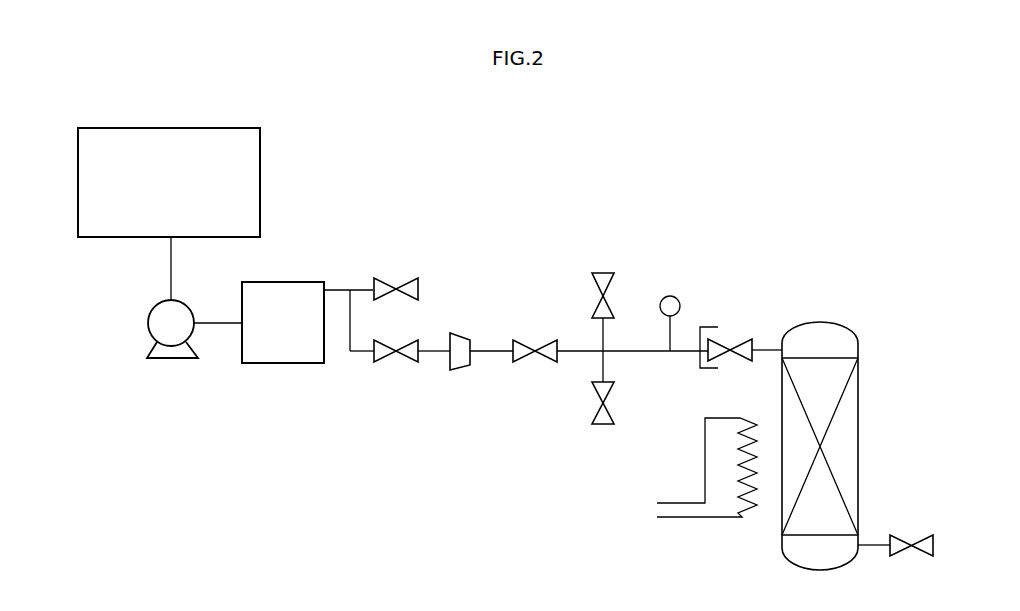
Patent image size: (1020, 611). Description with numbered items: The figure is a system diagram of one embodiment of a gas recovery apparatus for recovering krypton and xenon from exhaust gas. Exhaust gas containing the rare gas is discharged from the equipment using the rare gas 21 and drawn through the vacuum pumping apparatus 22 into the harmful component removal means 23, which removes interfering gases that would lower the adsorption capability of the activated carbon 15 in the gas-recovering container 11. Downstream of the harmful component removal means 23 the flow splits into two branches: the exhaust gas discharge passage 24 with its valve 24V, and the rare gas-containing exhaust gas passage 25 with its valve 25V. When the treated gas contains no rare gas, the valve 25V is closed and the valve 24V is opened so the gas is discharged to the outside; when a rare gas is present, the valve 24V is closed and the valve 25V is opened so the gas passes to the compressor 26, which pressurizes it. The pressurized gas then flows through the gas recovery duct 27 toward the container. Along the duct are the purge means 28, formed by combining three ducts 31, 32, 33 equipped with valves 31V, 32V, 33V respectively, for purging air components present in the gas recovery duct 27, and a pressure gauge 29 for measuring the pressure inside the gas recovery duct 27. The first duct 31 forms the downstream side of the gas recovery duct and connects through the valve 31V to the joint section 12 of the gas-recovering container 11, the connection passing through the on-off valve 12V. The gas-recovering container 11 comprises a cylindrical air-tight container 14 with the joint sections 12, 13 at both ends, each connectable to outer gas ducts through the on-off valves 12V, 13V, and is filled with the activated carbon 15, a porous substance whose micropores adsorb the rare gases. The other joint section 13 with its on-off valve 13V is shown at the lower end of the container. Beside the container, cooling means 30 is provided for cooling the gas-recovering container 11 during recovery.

The gas-recovering container 11 is at (851, 403).
The joint section 12 is at (765, 345).
The on-off valve 12V is at (723, 340).
The joint section 13 is at (868, 547).
The on-off valve 13V is at (920, 535).
The air-tight container 14 is at (860, 378).
The activated carbon 15 is at (848, 445).
The equipment using the rare gas 21 is at (260, 148).
The vacuum pumping apparatus 22 is at (185, 303).
The harmful component removal means 23 is at (297, 282).
The exhaust gas discharge passage 24 is at (357, 290).
The valve of the exhaust gas discharge passage 24V is at (405, 278).
The rare gas-containing exhaust gas passage 25 is at (360, 352).
The valve of the rare gas-containing exhaust gas passage 25V is at (392, 362).
The compressor 26 is at (455, 333).
The gas recovery duct 27 is at (483, 352).
The purge means 28 is at (582, 321).
The pressure gauge 29 is at (672, 296).
The cooling means 30 is at (748, 518).
The first duct 31 is at (570, 348).
The valve of the first duct 31V is at (540, 362).
The second duct 32 is at (605, 333).
The valve of the second duct 32V is at (612, 273).
The third duct 33 is at (605, 357).
The valve of the third duct 33V is at (598, 424).